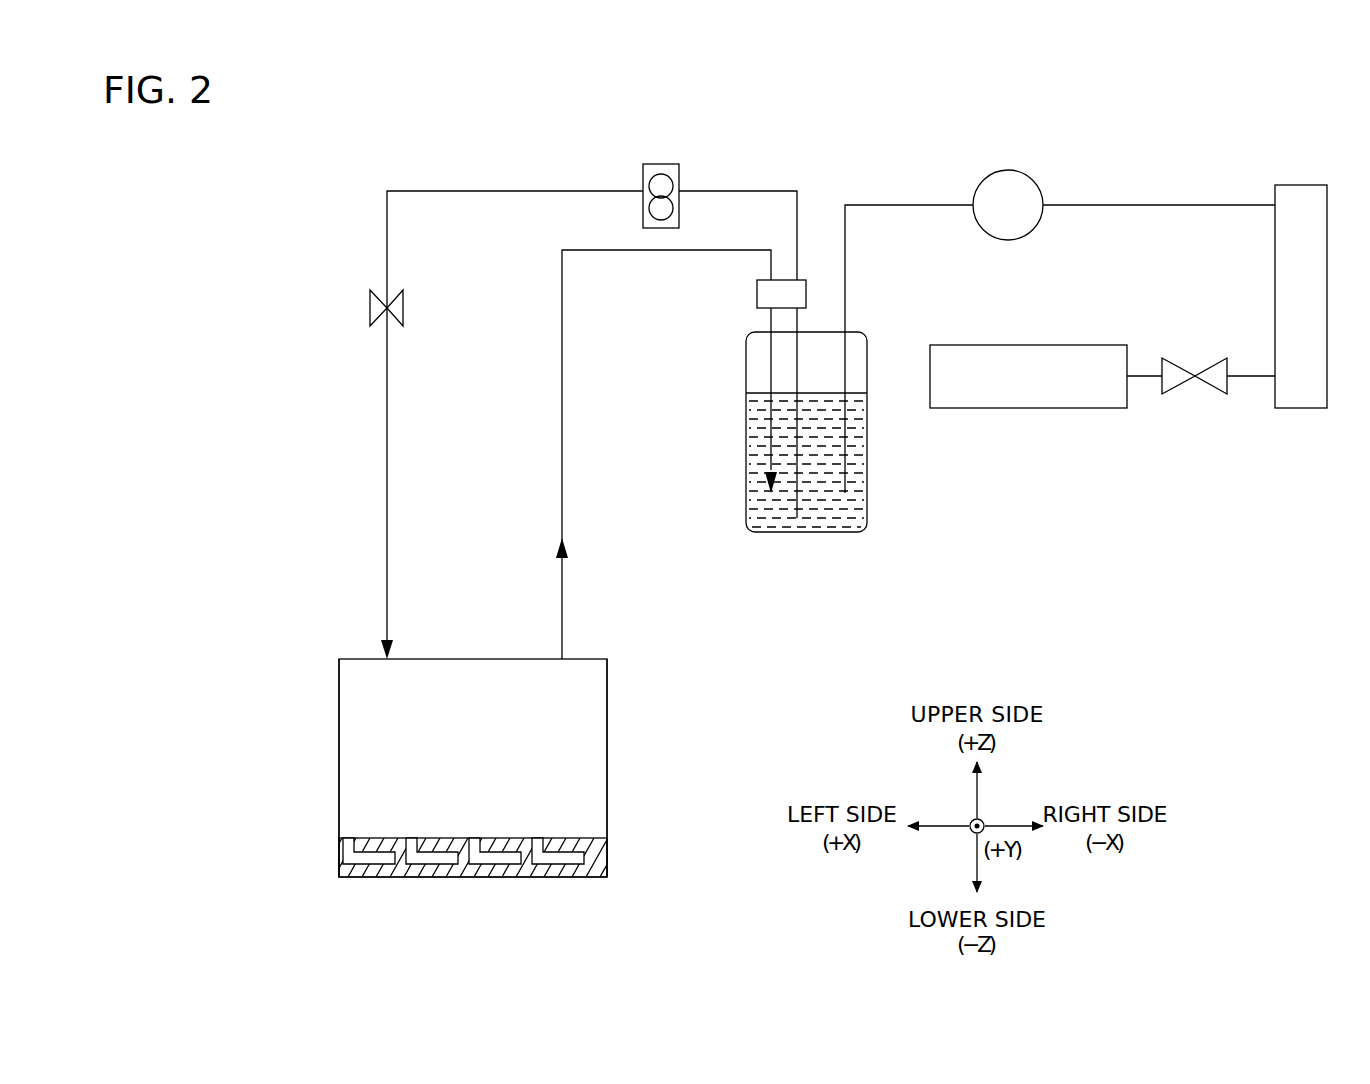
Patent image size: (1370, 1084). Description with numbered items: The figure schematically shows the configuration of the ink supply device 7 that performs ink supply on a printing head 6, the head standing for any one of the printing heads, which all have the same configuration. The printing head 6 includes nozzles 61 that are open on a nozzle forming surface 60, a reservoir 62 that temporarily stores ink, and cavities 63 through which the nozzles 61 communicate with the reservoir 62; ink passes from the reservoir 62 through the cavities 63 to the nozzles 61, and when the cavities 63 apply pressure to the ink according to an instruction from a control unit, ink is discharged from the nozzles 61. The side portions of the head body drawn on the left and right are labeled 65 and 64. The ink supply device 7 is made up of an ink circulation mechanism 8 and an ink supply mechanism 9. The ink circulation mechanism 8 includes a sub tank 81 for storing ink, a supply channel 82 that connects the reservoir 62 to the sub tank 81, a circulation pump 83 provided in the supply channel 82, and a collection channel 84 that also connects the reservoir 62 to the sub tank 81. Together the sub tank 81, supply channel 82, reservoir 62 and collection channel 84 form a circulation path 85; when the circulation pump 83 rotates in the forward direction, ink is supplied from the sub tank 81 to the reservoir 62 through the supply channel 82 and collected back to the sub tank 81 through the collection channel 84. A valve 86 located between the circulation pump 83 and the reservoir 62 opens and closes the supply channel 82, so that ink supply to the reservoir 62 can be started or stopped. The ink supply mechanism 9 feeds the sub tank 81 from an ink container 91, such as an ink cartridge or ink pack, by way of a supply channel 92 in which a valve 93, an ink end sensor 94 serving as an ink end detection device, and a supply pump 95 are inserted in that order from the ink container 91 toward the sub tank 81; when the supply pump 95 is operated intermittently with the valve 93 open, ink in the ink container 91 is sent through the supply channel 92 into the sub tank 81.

The printing head 6 is at (311, 670).
The ink supply device 7 is at (318, 144).
The ink circulation mechanism 8 is at (617, 145).
The ink supply mechanism 9 is at (1146, 143).
The nozzle forming surface 60 is at (346, 879).
The nozzles 61 is at (573, 878).
The reservoir 62 is at (355, 736).
The cavities 63 is at (413, 847).
The right side wall 64 is at (607, 775).
The left side wall 65 is at (339, 773).
The sub tank 81 is at (856, 332).
The supply channel 82 is at (462, 191).
The circulation pump 83 is at (676, 165).
The collection channel 84 is at (703, 250).
The circulation path 85 is at (770, 453).
The valve 86 is at (370, 308).
The ink container 91 is at (1070, 345).
The supply channel 92 is at (882, 205).
The valve 93 is at (1178, 364).
The ink end sensor 94 is at (1310, 185).
The supply pump 95 is at (1035, 178).